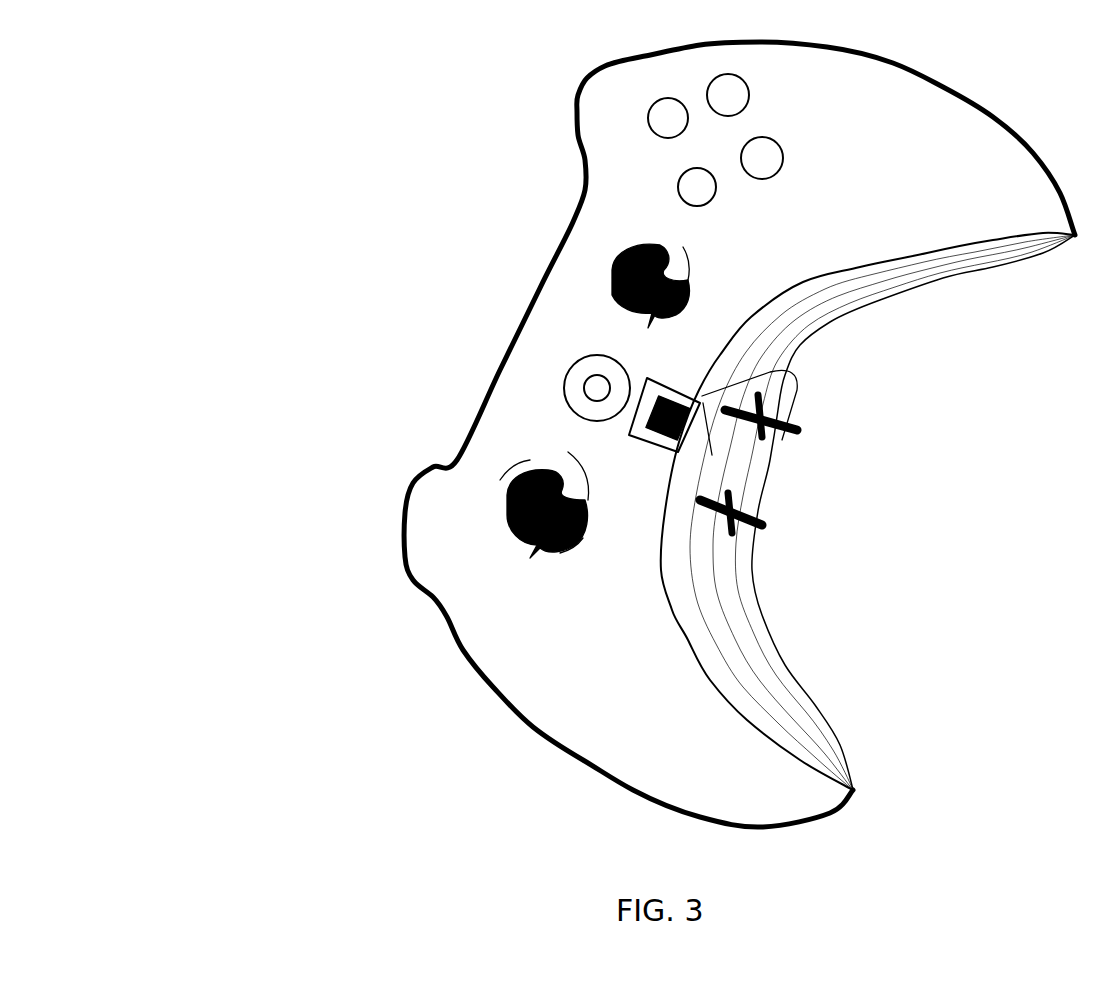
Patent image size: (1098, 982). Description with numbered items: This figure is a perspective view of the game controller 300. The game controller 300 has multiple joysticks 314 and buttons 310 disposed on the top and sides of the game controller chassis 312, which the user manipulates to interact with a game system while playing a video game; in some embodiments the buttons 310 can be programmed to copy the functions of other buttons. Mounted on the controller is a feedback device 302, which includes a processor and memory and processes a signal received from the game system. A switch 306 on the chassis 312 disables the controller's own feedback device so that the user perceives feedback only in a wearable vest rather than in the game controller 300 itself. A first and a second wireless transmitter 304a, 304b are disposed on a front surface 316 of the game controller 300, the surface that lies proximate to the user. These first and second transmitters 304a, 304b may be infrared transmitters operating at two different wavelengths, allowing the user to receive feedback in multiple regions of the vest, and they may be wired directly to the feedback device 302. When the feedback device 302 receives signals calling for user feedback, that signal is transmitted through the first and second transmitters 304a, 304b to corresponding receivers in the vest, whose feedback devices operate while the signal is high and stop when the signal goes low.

The game controller 300 is at (212, 46).
The feedback device 302 is at (663, 381).
The first wireless transmitter 304a is at (757, 525).
The second wireless transmitter 304b is at (778, 418).
The switch 306 is at (572, 383).
The buttons 310 is at (713, 177).
The game controller chassis 312 is at (500, 616).
The joysticks 314 is at (620, 292).
The front surface 316 is at (722, 443).